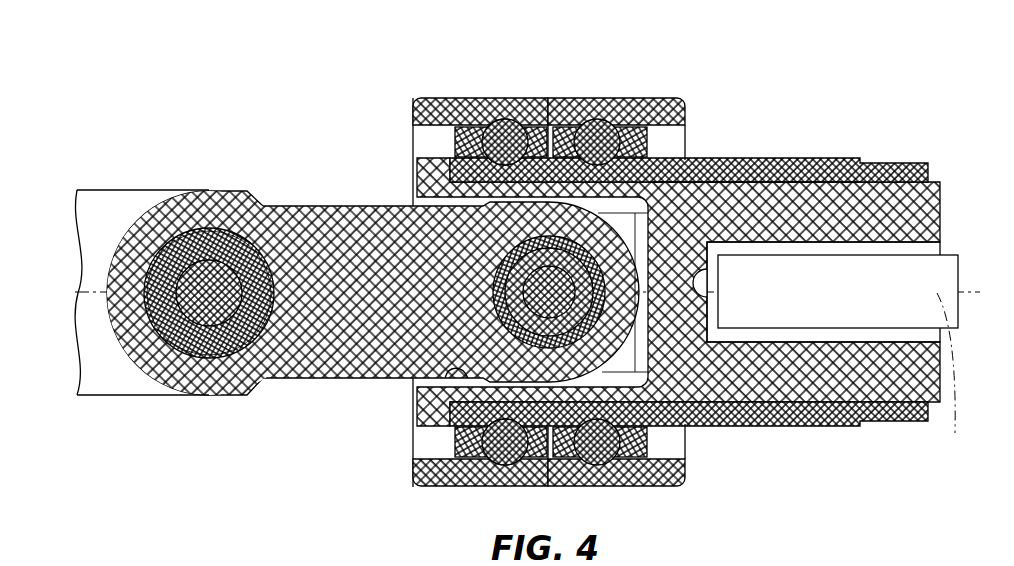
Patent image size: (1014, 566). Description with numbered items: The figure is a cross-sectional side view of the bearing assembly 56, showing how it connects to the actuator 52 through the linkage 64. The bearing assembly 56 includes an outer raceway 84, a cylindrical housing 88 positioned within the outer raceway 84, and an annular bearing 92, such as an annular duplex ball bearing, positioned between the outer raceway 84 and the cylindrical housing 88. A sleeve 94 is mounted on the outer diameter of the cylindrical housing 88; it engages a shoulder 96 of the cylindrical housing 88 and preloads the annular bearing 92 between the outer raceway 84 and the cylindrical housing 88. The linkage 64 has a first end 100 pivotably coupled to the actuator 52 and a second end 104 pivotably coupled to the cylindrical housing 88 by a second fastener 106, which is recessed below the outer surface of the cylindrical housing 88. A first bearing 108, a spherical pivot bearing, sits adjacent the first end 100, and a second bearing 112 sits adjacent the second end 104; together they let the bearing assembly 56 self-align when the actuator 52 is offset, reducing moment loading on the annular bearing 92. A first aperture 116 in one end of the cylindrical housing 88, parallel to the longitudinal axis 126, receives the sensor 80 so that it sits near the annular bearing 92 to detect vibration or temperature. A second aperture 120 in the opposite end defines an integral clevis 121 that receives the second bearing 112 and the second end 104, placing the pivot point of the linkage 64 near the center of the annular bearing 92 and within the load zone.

The actuator 52 is at (116, 374).
The bearing assembly 56 is at (687, 60).
The linkage 64 is at (335, 228).
The sensor 80 is at (897, 289).
The outer raceway 84 is at (482, 100).
The cylindrical housing 88 is at (887, 200).
The annular bearing 92 is at (630, 213).
The sleeve 94 is at (765, 167).
The shoulder 96 is at (455, 173).
The first end 100 is at (124, 229).
The second end 104 is at (627, 347).
The second fastener 106 is at (552, 305).
The first bearing 108 is at (223, 250).
The second bearing 112 is at (497, 306).
The first aperture 116 is at (807, 342).
The second aperture 120 is at (457, 370).
The integral clevis 121 is at (650, 182).
The longitudinal axis 126 is at (954, 380).